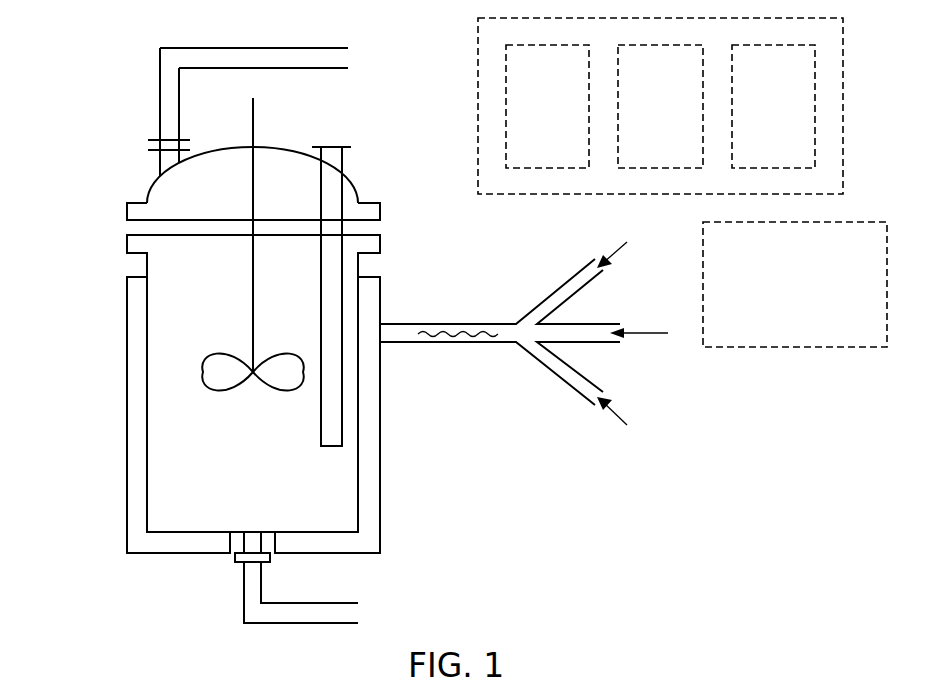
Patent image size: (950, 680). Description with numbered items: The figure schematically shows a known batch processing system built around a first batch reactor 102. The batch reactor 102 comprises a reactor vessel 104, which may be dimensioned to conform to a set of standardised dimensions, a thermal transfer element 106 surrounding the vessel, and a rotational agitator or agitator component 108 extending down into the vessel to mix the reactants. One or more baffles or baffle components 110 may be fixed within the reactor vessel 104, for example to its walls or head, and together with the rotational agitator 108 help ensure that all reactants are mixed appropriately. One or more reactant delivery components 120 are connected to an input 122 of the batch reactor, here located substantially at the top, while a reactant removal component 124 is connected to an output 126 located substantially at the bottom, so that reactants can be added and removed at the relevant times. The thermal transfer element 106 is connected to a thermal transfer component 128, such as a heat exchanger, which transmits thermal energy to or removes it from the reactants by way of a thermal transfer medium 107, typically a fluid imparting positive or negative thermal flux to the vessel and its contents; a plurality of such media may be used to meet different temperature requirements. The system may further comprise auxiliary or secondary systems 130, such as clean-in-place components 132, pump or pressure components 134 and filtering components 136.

The first batch reactor 102 is at (108, 176).
The reactor vessel 104 is at (137, 254).
The thermal transfer element 106 is at (382, 433).
The thermal transfer medium 107 is at (462, 323).
The rotational agitator 108 is at (256, 122).
The baffle component 110 is at (332, 448).
The reactant delivery component 120 is at (330, 57).
The input 122 is at (160, 172).
The reactant removal component 124 is at (352, 611).
The output 126 is at (255, 545).
The thermal transfer component 128 is at (822, 296).
The auxiliary or secondary systems 130 is at (843, 117).
The clean-in-place component 132 is at (575, 119).
The pump or pressure component 134 is at (801, 119).
The filtering component 136 is at (688, 119).